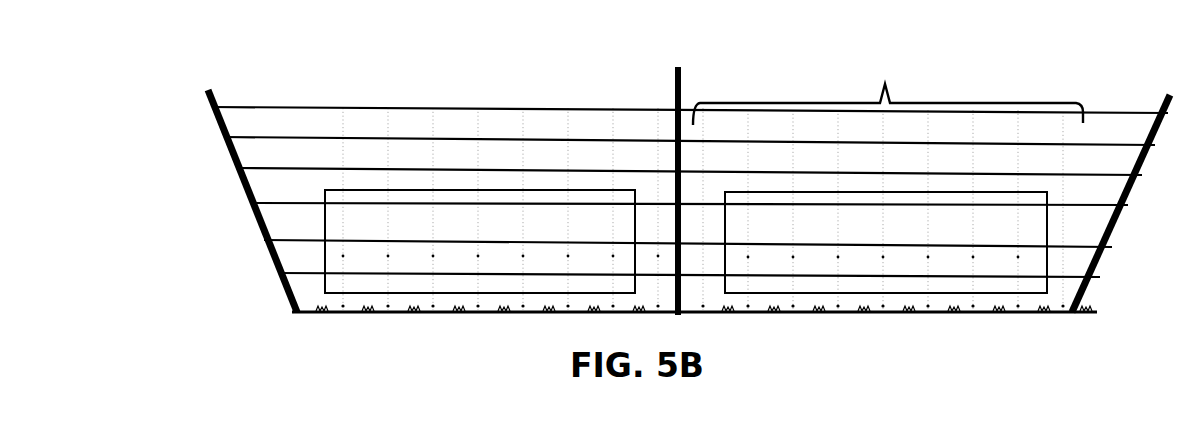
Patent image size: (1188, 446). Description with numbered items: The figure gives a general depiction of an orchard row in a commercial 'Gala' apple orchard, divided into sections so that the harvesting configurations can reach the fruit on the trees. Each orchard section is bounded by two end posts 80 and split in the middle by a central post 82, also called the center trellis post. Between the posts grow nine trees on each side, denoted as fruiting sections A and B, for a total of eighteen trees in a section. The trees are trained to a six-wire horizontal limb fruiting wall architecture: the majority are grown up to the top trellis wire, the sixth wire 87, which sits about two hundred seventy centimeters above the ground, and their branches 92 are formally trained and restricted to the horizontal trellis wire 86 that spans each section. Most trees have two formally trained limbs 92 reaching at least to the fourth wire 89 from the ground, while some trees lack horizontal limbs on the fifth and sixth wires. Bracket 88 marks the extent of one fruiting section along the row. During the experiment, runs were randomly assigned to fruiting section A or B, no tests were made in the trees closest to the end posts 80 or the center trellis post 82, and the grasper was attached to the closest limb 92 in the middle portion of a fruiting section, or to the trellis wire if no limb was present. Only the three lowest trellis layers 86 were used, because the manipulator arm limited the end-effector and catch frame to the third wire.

The end post 80 is at (213, 92).
The central post 82 is at (673, 68).
The horizontal trellis wire 86 is at (285, 217).
The sixth wire 87 is at (323, 106).
The fence section 88 is at (888, 91).
The fourth wire 89 is at (266, 168).
The branch 92 is at (596, 180).
The fruiting section A is at (451, 191).
The fruiting section B is at (968, 192).